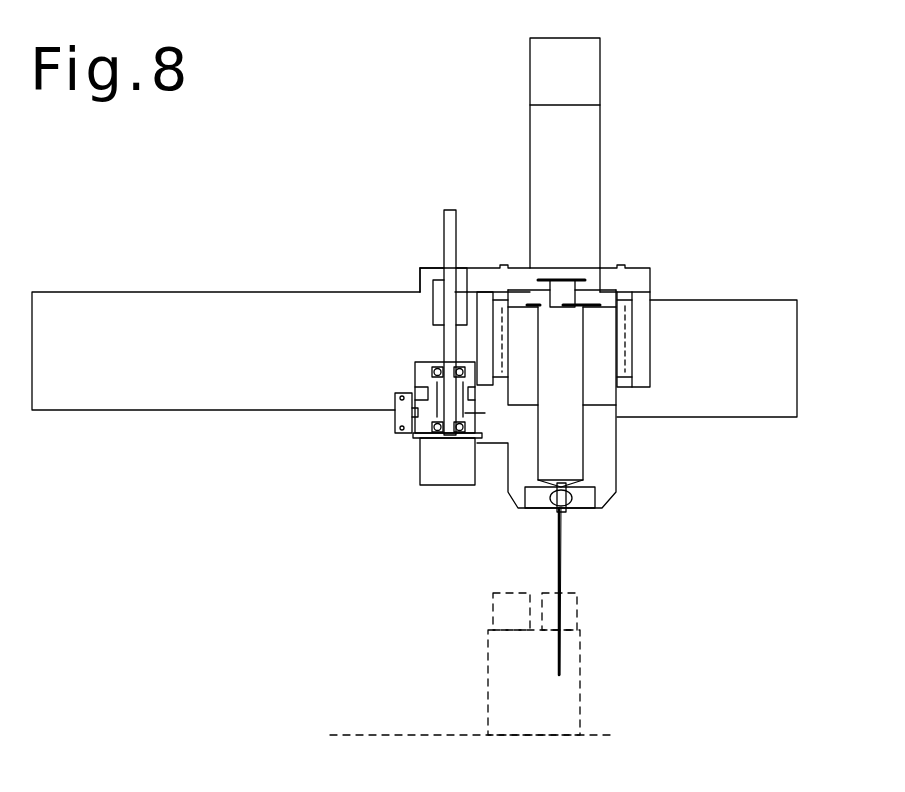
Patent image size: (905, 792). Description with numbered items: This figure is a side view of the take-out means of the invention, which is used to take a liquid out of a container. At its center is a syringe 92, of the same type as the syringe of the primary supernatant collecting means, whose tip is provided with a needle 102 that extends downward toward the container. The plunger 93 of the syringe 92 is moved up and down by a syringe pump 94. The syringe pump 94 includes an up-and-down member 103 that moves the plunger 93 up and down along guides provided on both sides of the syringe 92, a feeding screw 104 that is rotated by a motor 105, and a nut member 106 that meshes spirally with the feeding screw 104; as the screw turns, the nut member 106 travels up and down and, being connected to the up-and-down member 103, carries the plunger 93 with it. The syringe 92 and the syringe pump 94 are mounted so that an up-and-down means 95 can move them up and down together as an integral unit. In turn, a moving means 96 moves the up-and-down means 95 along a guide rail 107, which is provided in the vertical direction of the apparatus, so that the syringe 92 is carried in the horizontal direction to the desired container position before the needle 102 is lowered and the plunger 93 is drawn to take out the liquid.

The syringe 92 is at (570, 455).
The plunger 93 is at (563, 278).
The syringe pump 94 is at (603, 277).
The up-and-down means 95 is at (582, 172).
The moving means 96 is at (645, 308).
The needle 102 is at (562, 563).
The up-and-down member 103 is at (522, 275).
The feeding screw 104 is at (444, 233).
The motor 105 is at (442, 458).
The nut member 106 is at (433, 309).
The guide rail 107 is at (157, 313).